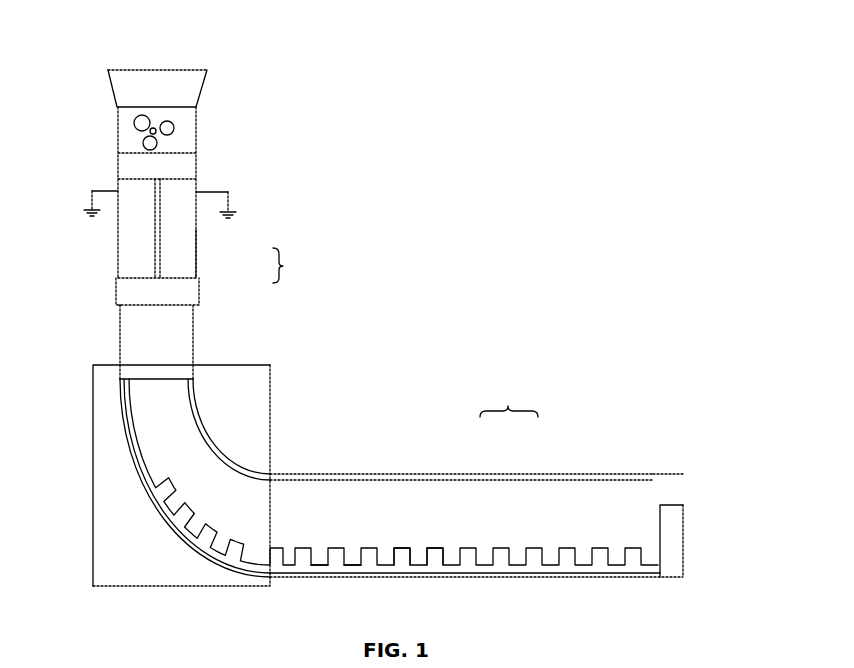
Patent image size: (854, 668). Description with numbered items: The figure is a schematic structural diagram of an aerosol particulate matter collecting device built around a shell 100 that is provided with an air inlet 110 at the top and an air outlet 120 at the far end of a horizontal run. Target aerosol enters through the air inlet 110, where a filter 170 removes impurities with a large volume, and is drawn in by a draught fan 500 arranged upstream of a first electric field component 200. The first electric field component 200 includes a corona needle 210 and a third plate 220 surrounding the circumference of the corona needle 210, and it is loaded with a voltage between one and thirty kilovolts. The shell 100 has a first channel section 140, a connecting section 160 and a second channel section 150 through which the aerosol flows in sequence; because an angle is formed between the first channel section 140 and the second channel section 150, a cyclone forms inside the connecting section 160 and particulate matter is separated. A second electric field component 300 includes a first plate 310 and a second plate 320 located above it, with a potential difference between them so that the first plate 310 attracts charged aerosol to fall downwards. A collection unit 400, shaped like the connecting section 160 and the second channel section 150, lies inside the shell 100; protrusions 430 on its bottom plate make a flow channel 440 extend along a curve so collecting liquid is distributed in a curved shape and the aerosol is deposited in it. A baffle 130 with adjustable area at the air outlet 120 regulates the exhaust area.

The shell 100 is at (117, 163).
The air inlet 110 is at (135, 70).
The air outlet 120 is at (673, 488).
The baffle 130 is at (677, 540).
The first channel section 140 is at (193, 350).
The second channel section 150 is at (337, 474).
The connecting section 160 is at (223, 457).
The filter 170 is at (165, 70).
The first electric field component 200 is at (299, 265).
The corona needle 210 is at (157, 237).
The third plate 220 is at (195, 260).
The second electric field component 300 is at (509, 399).
The first plate 310 is at (155, 500).
The second plate 320 is at (205, 435).
The collection unit 400 is at (290, 565).
The protrusions 430 is at (437, 556).
The flow channel 440 is at (353, 555).
The draught fan 500 is at (173, 127).